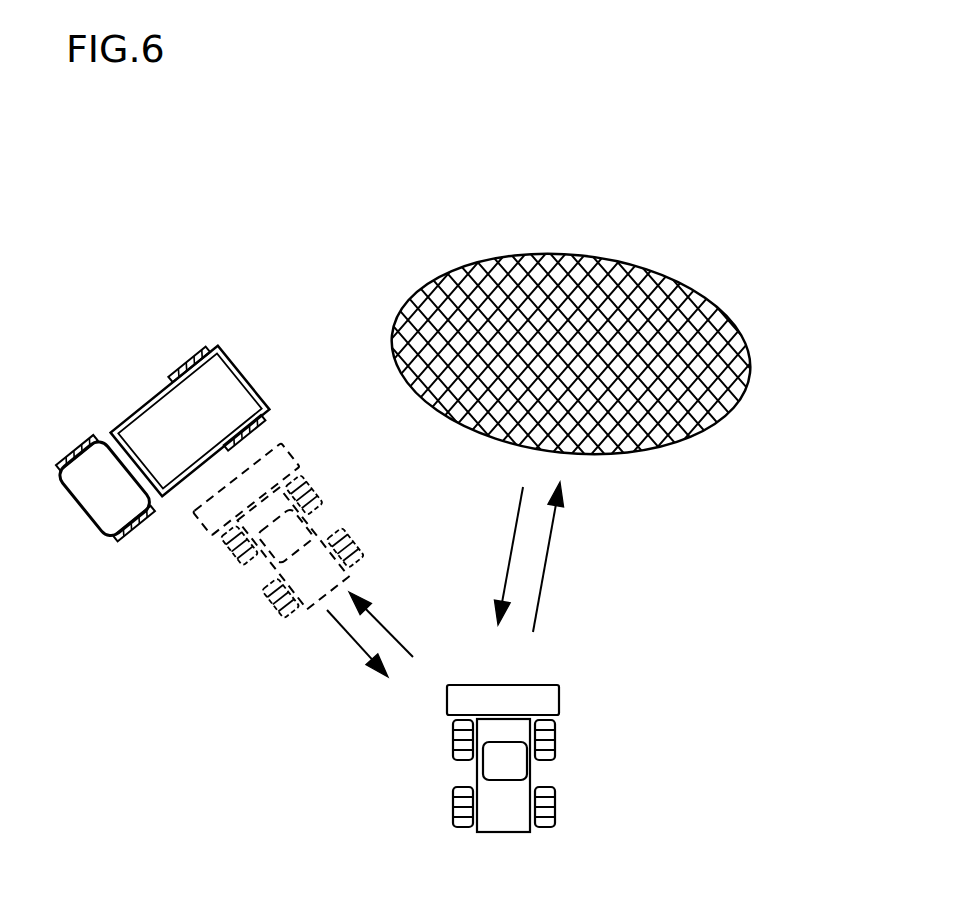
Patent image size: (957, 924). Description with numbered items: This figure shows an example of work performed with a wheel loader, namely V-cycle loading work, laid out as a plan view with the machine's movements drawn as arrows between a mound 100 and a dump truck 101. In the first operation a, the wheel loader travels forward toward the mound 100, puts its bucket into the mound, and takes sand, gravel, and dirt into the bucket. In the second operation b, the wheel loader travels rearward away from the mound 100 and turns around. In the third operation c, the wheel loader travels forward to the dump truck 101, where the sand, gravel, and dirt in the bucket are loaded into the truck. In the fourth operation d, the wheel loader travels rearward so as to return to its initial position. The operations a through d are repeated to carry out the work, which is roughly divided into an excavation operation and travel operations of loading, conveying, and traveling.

The mound 100 is at (677, 445).
The dump truck 101 is at (83, 517).
The forward travel and excavation operation a is at (552, 557).
The rearward travel and turnaround operation b is at (505, 556).
The forward travel to dump truck and loading operation c is at (381, 624).
The rearward travel to initial position d is at (357, 643).